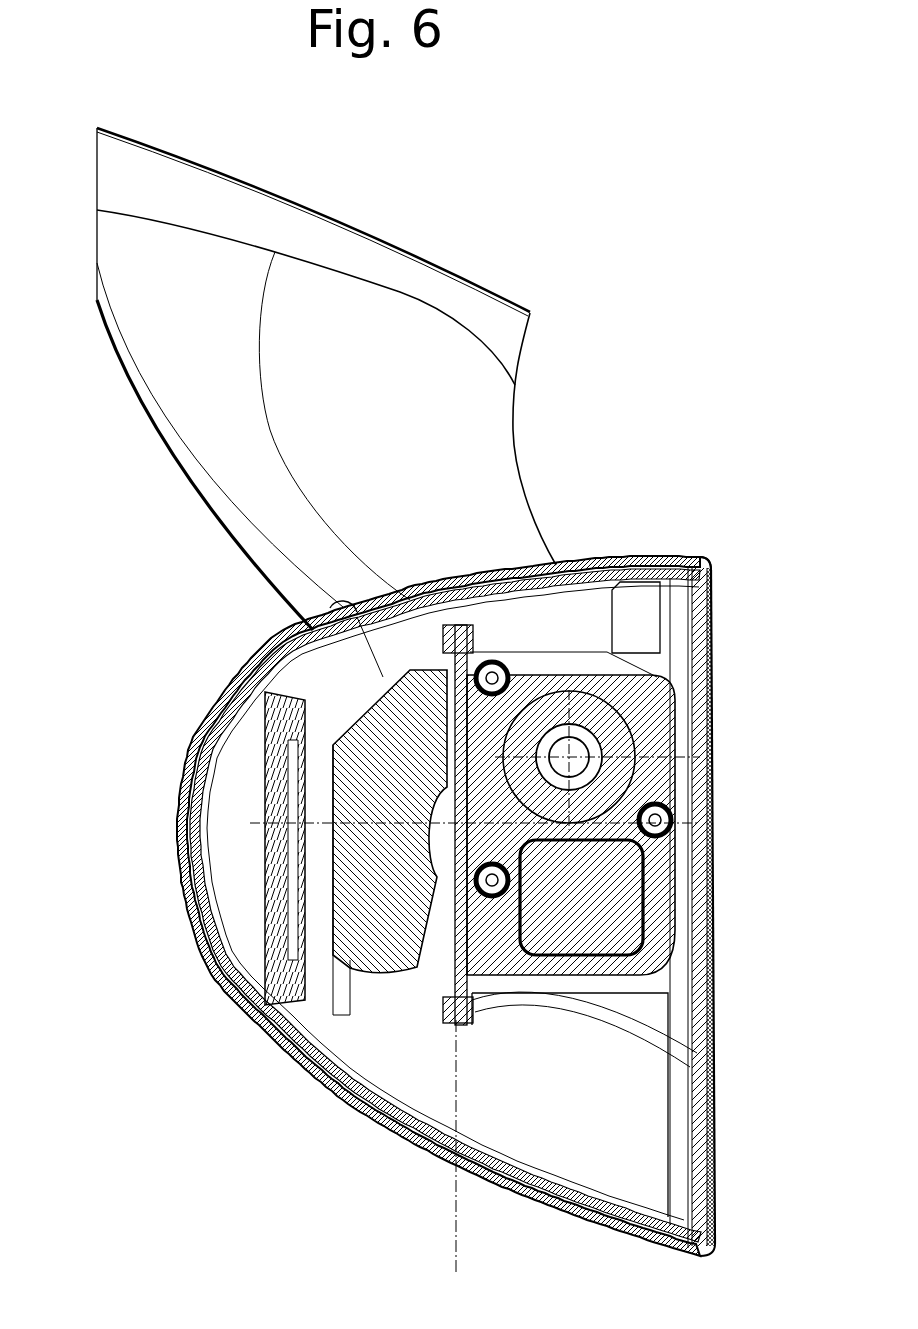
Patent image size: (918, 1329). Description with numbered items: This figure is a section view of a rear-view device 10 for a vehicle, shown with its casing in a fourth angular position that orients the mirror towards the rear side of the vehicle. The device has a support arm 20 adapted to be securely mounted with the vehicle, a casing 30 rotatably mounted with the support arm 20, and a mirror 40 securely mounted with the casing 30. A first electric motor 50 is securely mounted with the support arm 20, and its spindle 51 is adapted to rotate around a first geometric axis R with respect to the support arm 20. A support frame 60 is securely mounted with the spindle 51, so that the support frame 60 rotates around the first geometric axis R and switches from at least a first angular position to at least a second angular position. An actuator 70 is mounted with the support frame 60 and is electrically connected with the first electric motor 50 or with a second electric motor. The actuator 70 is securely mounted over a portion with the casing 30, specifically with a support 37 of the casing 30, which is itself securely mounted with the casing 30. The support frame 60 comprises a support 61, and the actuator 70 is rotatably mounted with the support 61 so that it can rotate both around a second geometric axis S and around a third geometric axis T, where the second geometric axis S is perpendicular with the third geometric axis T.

The rear-view device 10 is at (705, 498).
The support arm 20 is at (466, 452).
The casing 30 is at (198, 745).
The support 37 is at (276, 800).
The mirror 40 is at (724, 848).
The first electric motor 50 is at (588, 905).
The spindle 51 is at (574, 756).
The support frame 60 is at (650, 961).
The support 61 is at (322, 612).
The actuator 70 is at (355, 743).
The first geometric axis R is at (620, 762).
The third geometric axis T is at (453, 828).
The second geometric axis S is at (455, 1222).